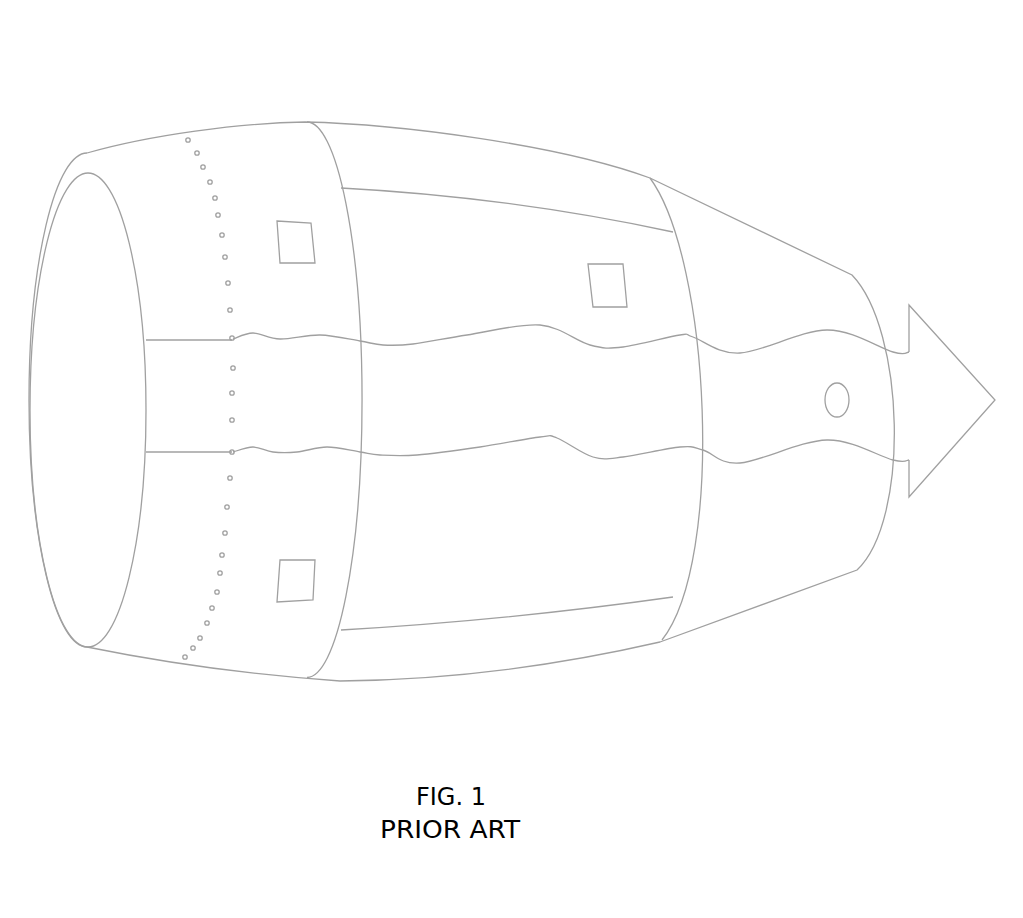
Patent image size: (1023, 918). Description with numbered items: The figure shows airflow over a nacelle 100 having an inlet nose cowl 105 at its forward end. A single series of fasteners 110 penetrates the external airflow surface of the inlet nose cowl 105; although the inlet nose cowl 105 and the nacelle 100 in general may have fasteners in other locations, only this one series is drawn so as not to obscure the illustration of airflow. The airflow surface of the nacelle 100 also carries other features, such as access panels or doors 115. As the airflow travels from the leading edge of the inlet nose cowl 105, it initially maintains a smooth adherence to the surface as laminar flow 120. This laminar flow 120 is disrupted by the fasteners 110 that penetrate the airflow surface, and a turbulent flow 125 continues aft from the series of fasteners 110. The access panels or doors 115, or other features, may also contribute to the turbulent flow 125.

The nacelle 100 is at (762, 140).
The inlet nose cowl 105 is at (167, 595).
The fasteners 110 is at (205, 165).
The access panels or doors 115 is at (291, 217).
The laminar flow 120 is at (184, 392).
The turbulent flow 125 is at (607, 382).